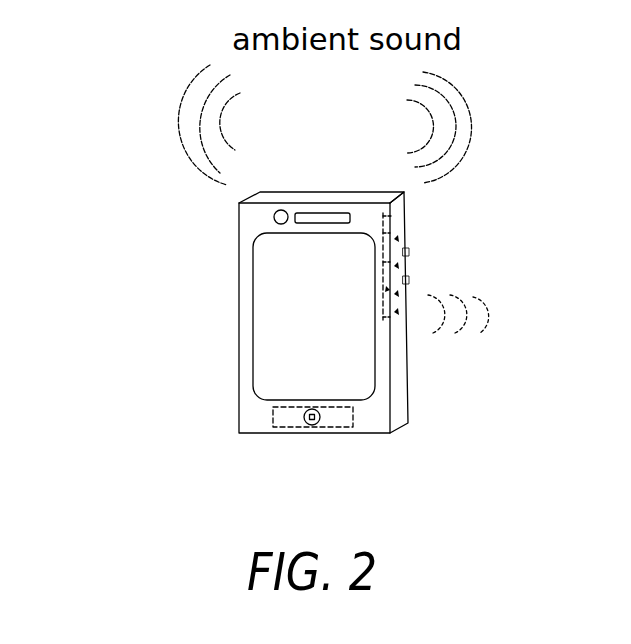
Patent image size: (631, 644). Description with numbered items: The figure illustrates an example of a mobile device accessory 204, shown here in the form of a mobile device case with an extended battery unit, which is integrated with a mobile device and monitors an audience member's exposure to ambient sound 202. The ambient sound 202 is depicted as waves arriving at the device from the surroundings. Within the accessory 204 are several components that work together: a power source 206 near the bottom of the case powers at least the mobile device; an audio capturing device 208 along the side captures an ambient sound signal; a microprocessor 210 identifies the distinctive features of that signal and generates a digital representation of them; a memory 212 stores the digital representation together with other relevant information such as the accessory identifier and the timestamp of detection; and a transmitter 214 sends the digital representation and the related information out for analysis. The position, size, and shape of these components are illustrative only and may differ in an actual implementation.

The ambient sound 202 is at (184, 142).
The mobile device accessory 204 is at (240, 388).
The power source 206 is at (355, 418).
The audio capturing device 208 is at (402, 230).
The microprocessor 210 is at (405, 252).
The memory 212 is at (405, 280).
The transmitter 214 is at (395, 325).